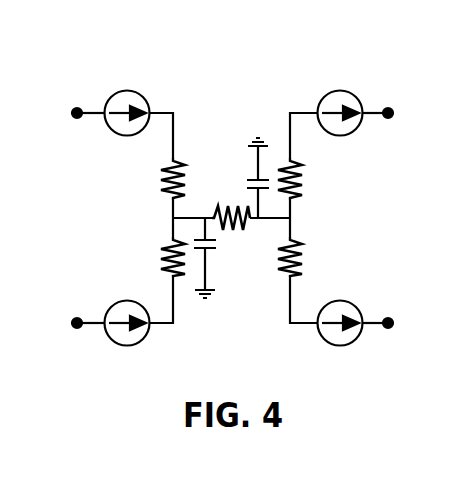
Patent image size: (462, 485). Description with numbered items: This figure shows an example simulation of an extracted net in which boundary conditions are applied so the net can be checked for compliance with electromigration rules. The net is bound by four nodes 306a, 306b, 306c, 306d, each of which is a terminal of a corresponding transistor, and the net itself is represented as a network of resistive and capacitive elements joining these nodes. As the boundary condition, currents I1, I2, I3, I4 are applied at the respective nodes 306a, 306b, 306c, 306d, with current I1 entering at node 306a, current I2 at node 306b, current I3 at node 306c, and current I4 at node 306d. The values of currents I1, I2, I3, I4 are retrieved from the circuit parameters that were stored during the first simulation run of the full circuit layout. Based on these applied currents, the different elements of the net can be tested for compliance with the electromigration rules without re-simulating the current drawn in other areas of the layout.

The node 306a is at (73, 108).
The node 306b is at (74, 319).
The node 306c is at (391, 108).
The node 306d is at (391, 317).
The current I1 is at (138, 102).
The current I2 is at (138, 336).
The current I3 is at (334, 102).
The current I4 is at (334, 333).